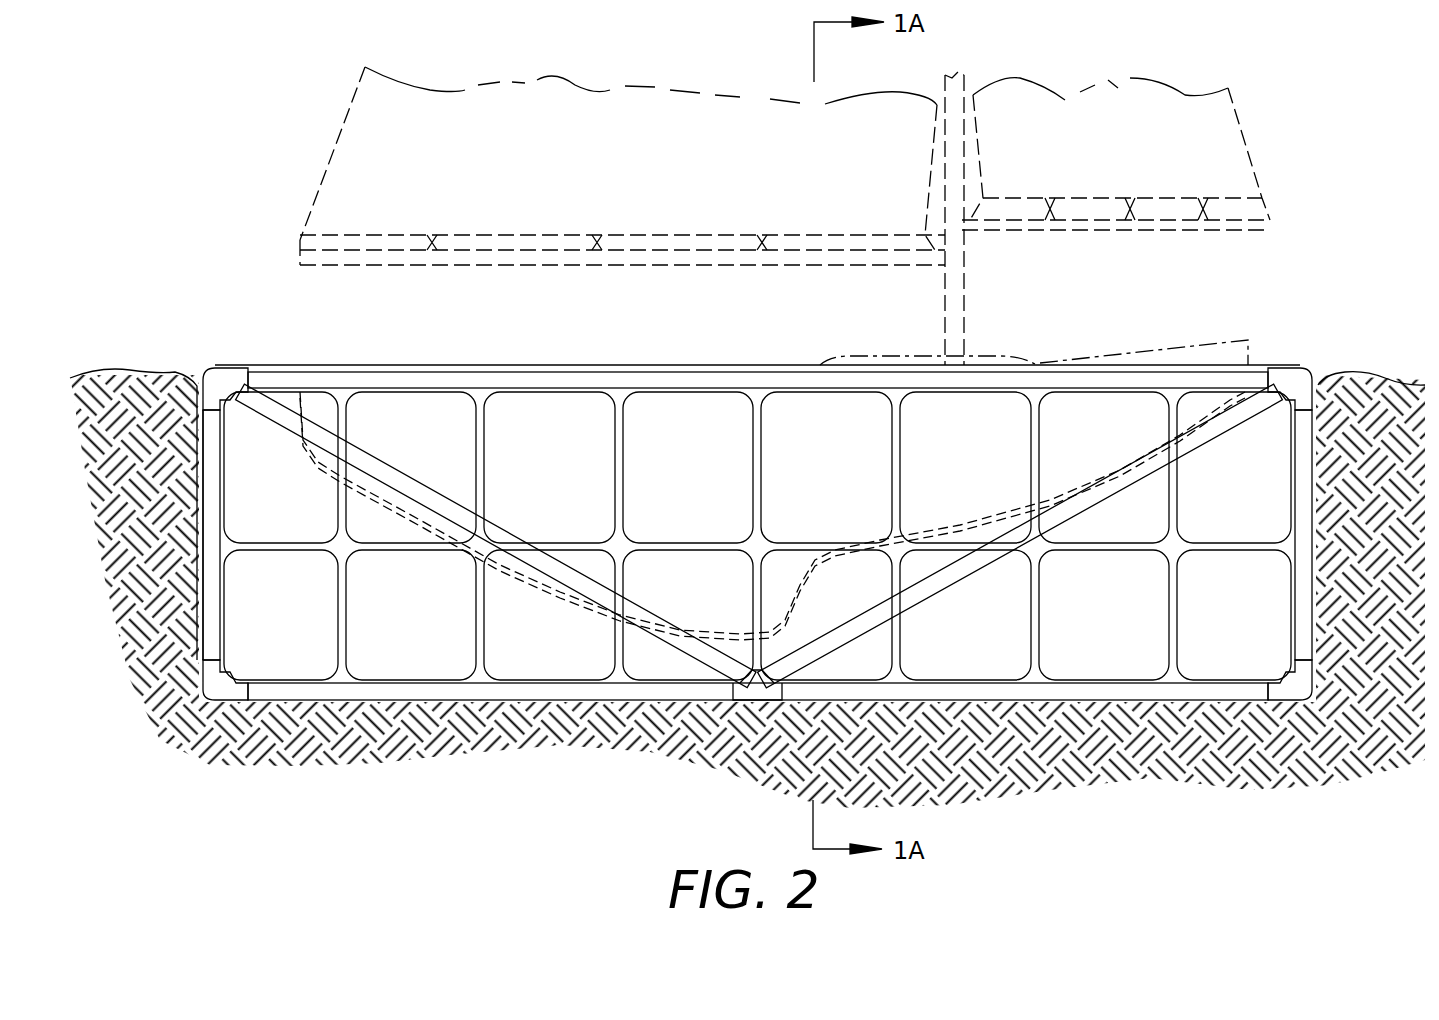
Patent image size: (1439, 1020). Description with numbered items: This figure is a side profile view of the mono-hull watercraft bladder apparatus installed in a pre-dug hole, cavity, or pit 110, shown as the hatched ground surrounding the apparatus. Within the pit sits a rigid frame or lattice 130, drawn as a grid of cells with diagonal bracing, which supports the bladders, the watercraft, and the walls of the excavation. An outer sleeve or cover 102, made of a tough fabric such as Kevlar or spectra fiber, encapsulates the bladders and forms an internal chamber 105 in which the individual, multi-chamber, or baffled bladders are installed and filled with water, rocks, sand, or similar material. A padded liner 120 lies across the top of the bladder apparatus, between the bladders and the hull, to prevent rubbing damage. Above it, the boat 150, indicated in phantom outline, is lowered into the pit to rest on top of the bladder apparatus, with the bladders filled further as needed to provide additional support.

The outer sleeve or cover 102 is at (1220, 655).
The internal chamber 105 is at (1115, 672).
The pre-dug hole or cavity or pit 110 is at (1345, 375).
The padded liner 120 is at (1253, 362).
The rigid frame or lattice 130 is at (196, 376).
The boat 150 is at (1010, 90).